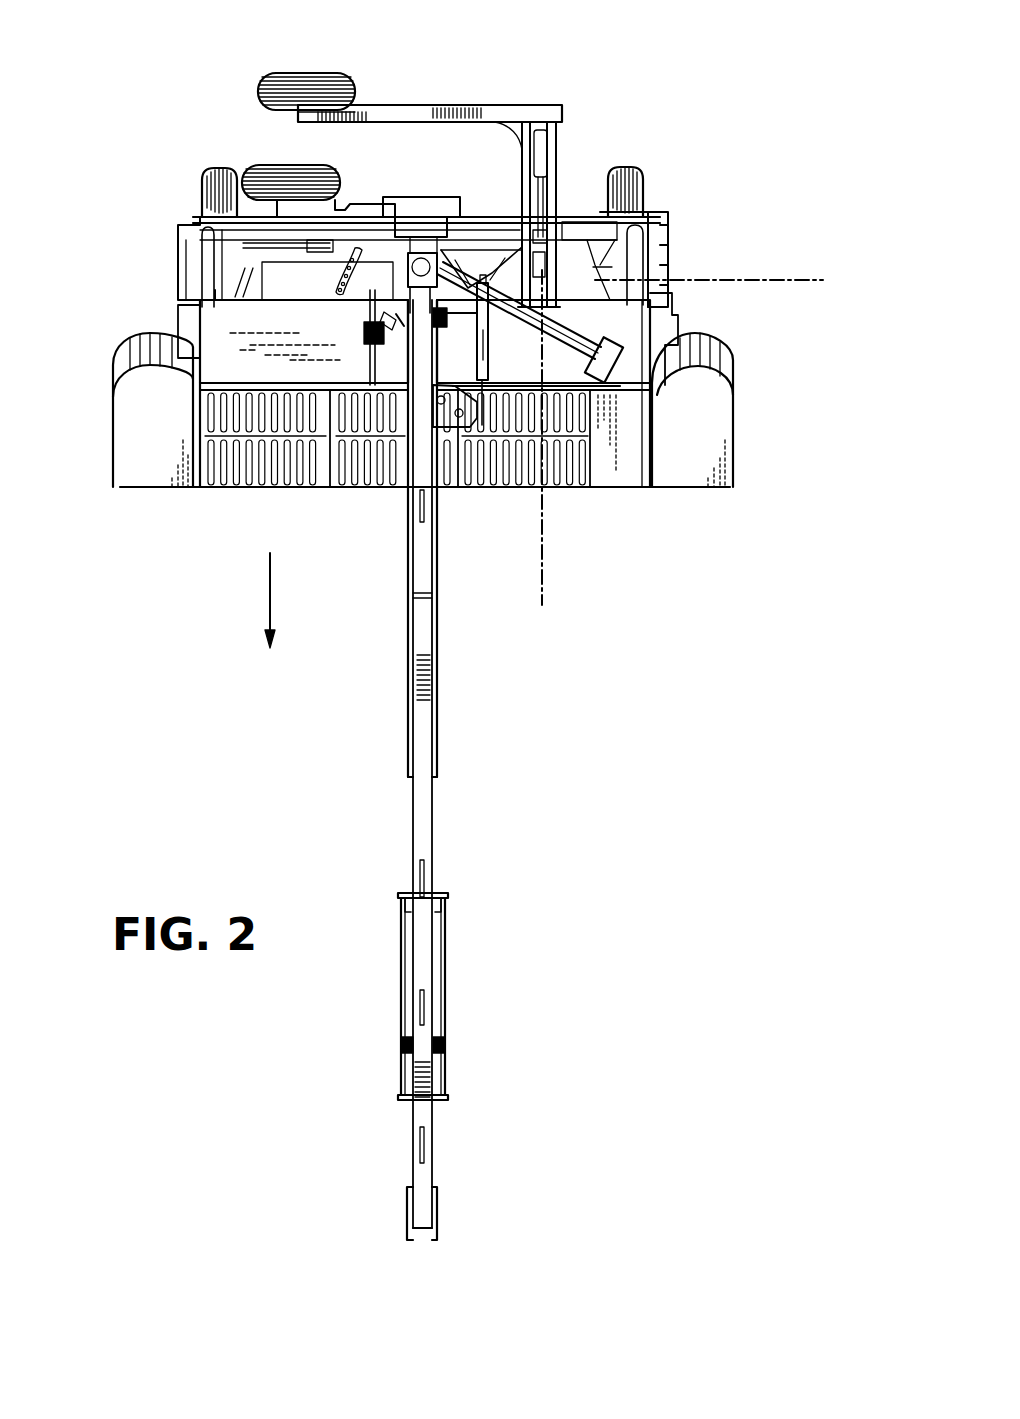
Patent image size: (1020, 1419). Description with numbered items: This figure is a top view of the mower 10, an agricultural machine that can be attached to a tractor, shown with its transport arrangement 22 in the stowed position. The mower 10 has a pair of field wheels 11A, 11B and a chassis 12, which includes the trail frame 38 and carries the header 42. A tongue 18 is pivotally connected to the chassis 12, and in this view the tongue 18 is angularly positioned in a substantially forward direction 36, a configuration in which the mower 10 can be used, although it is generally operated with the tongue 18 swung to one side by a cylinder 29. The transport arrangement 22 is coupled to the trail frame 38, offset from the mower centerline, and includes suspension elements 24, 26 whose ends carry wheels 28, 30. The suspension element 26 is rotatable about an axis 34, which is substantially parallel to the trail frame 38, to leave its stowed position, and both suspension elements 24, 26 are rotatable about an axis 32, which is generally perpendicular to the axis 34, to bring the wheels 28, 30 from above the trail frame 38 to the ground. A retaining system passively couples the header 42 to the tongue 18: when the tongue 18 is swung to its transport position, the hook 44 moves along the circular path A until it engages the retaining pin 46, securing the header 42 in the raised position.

The mower 10 is at (719, 133).
The field wheel 11A is at (205, 183).
The field wheel 11B is at (623, 165).
The chassis 12 is at (745, 431).
The tongue 18 is at (420, 631).
The transport arrangement 22 is at (588, 131).
The suspension element 24 is at (377, 199).
The suspension element 26 is at (468, 104).
The wheel 28 is at (275, 167).
The cylinder 29 is at (487, 360).
The wheel 30 is at (311, 74).
The axis 32 is at (545, 566).
The axis 34 is at (748, 280).
The forward direction 36 is at (268, 608).
The trail frame 38 is at (648, 232).
The header 42 is at (248, 336).
The hook 44 is at (447, 320).
The retaining pin 46 is at (378, 311).
The circular path A is at (379, 310).